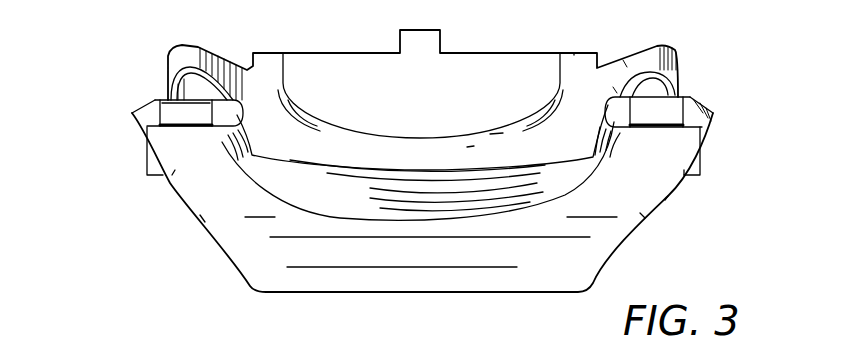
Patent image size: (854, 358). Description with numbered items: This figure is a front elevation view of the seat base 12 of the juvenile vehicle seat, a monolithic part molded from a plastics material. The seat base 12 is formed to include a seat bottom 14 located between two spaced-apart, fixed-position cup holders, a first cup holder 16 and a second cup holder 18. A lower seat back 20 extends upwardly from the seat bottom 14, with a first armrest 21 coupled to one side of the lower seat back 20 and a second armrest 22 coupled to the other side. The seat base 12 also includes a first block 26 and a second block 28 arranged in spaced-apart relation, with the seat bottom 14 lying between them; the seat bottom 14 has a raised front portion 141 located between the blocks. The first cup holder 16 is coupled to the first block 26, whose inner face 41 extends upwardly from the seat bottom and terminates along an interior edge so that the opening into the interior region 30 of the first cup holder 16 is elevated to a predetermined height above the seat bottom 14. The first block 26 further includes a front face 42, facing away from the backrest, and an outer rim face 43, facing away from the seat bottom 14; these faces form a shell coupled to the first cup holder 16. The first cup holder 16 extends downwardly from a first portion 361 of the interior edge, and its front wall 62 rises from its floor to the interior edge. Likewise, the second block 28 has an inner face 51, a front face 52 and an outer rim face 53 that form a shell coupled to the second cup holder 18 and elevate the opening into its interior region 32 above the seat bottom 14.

The seat base 12 is at (118, 88).
The seat bottom 14 is at (445, 166).
The first cup holder 16 is at (703, 165).
The second cup holder 18 is at (141, 165).
The lower seat back 20 is at (338, 73).
The first armrest 21 is at (685, 60).
The second armrest 22 is at (167, 50).
The first block 26 is at (658, 140).
The second block 28 is at (183, 137).
The interior region 30 is at (664, 115).
The interior region 32 is at (181, 110).
The inner face 41 is at (610, 124).
The front face 42 is at (648, 140).
The outer rim face 43 is at (711, 112).
The inner face 51 is at (248, 128).
The front face 52 is at (188, 147).
The outer rim face 53 is at (137, 108).
The front wall 62 is at (690, 178).
The raised front portion 141 is at (353, 165).
The first portion of interior edge 361 is at (577, 55).